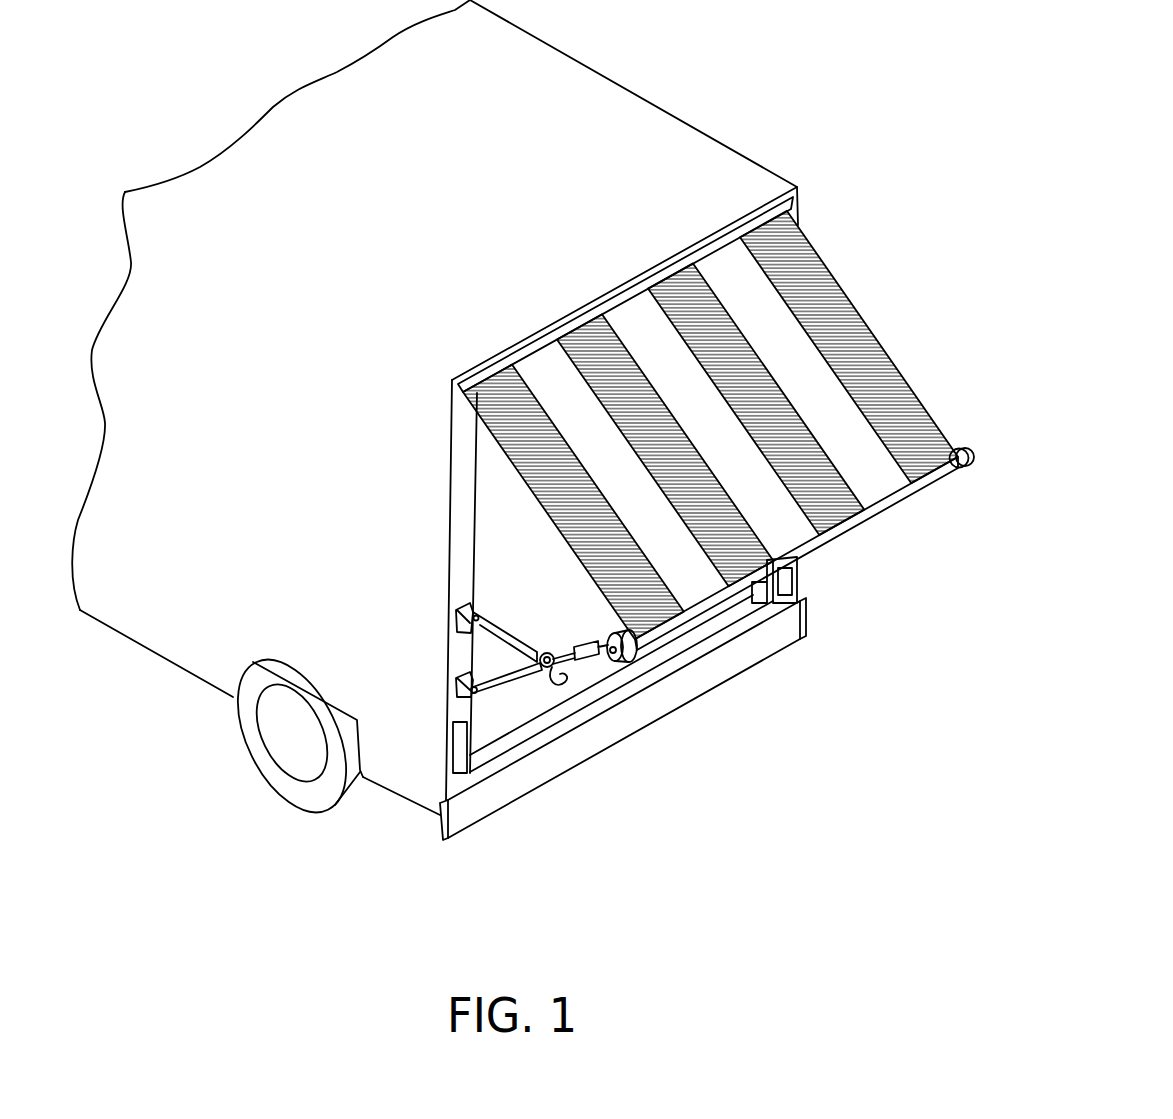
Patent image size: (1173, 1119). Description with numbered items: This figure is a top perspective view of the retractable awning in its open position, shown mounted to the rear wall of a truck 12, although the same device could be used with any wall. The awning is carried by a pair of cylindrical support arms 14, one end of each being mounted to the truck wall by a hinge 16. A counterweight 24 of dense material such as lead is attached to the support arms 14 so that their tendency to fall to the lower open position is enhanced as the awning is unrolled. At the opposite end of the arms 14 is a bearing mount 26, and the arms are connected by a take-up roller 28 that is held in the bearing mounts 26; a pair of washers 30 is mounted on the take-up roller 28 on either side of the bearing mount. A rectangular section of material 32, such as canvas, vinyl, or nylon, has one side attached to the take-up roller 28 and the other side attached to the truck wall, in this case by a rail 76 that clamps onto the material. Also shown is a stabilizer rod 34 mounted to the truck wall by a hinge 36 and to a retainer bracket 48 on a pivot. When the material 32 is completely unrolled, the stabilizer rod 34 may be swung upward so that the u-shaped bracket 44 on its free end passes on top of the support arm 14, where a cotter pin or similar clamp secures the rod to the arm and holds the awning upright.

The truck 12 is at (610, 133).
The rail 76 is at (762, 213).
The rectangular section of material 32 is at (843, 287).
The take-up roller 28 is at (882, 508).
The washers 30 is at (965, 478).
The bearing mount 26 is at (633, 655).
The counterweight 24 is at (593, 663).
The u-shaped bracket 44 is at (560, 677).
The stabilizer rod 34 is at (520, 640).
The hinge 36 is at (457, 621).
The support arms 14 is at (520, 683).
The hinge 16 is at (463, 697).
The retainer bracket 48 is at (458, 697).